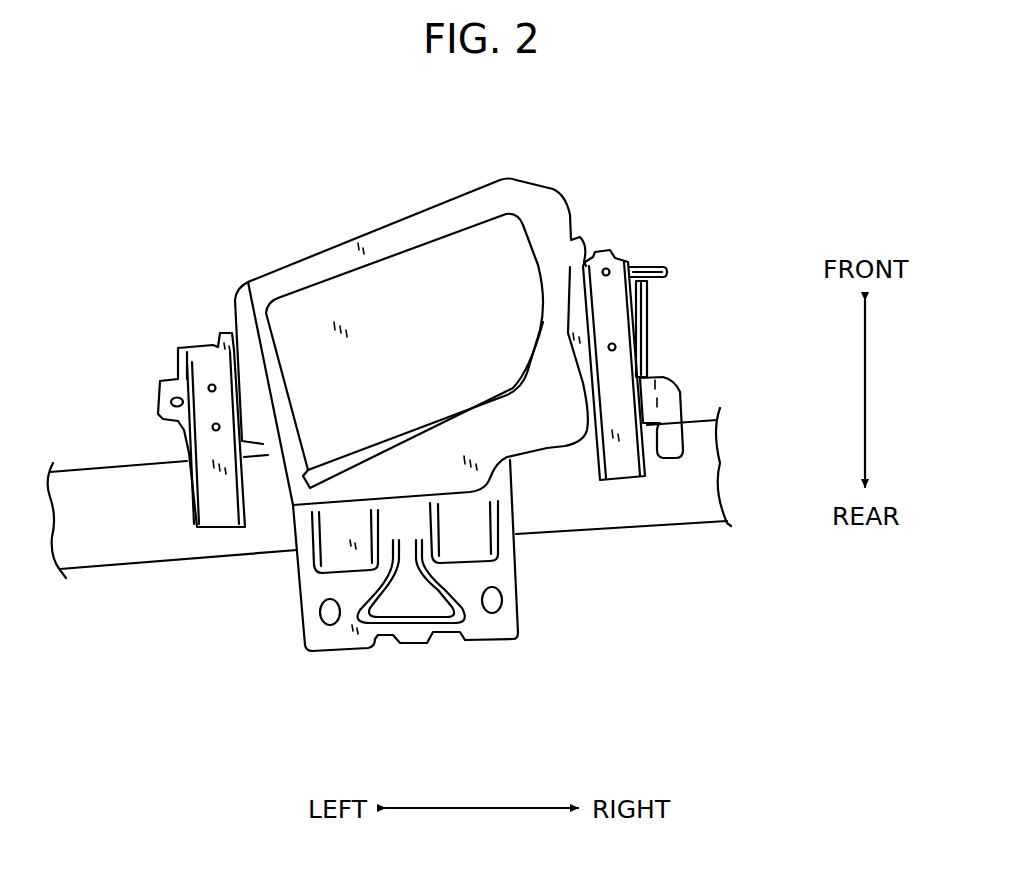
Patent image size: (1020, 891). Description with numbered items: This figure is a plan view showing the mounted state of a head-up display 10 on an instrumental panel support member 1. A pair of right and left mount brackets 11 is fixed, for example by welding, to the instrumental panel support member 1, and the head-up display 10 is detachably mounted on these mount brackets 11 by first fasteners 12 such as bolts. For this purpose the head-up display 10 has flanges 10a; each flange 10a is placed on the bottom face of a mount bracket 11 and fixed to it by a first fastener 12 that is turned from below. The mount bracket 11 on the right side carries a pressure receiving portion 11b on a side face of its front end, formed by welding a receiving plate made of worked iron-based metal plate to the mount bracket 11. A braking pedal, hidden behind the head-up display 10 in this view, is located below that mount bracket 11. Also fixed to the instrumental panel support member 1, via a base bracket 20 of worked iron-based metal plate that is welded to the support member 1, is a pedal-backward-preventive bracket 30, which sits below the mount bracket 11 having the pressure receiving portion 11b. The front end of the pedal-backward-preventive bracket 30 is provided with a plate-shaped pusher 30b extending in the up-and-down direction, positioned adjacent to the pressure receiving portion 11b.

The instrumental panel support member 1 is at (100, 572).
The head-up display 10 is at (394, 283).
The flange 10a is at (248, 427).
The mount bracket 11 is at (212, 491).
The pressure receiving portion 11b is at (666, 278).
The first fastener 12 is at (211, 382).
The base bracket 20 is at (673, 400).
The pedal-backward-preventive bracket 30 is at (647, 370).
The pusher 30b is at (666, 268).